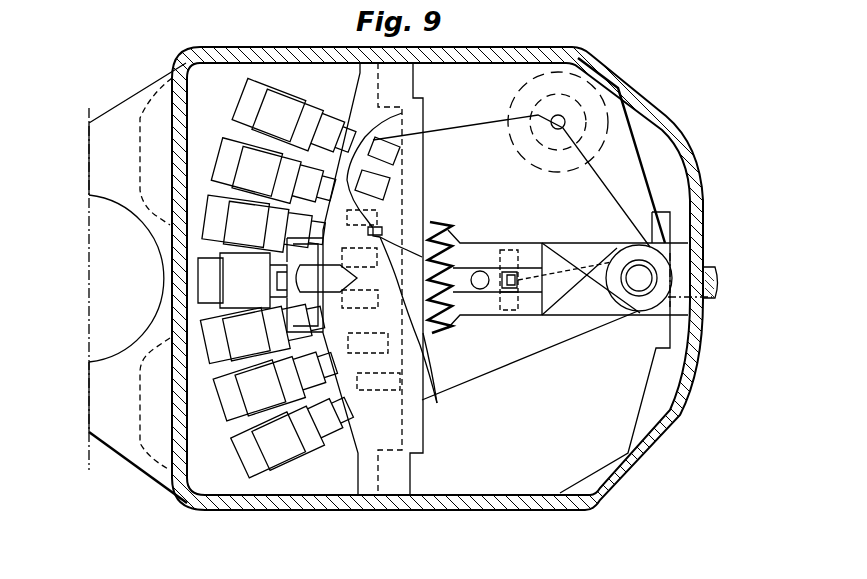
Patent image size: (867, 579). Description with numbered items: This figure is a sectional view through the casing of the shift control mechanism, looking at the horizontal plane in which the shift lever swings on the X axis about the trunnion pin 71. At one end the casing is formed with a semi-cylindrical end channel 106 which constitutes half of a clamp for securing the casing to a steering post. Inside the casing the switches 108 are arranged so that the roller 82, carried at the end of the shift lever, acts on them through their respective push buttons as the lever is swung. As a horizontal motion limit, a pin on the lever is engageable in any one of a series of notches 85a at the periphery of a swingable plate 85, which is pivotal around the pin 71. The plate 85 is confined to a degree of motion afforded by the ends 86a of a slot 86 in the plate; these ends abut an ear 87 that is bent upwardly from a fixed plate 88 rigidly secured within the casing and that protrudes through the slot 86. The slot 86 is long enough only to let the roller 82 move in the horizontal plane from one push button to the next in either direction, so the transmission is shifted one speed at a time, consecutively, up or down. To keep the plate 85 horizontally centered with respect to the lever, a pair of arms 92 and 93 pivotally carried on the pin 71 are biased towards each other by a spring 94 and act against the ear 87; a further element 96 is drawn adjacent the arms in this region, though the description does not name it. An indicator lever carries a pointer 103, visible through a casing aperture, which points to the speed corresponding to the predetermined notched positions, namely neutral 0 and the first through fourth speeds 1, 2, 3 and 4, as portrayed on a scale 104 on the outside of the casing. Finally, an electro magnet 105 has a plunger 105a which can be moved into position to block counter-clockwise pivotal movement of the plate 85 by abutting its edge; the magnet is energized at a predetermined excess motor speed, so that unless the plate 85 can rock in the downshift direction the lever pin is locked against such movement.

The neutral position 0 is at (364, 230).
The first speed position 1 is at (401, 270).
The second speed position 2 is at (402, 308).
The third speed position 3 is at (417, 337).
The fourth speed position 4 is at (430, 377).
The trunnion pin 71 is at (641, 278).
The roller 82 is at (271, 279).
The swingable plate 85 is at (485, 370).
The notches 85a is at (400, 172).
The slot 86 is at (520, 258).
The slot ends 86a is at (508, 305).
The ear 87 is at (517, 280).
The fixed plate 88 is at (628, 125).
The arm 92 is at (485, 245).
The arm 93 is at (560, 320).
The spring 94 is at (450, 225).
The roller 96 is at (479, 290).
The pointer 103 is at (326, 278).
The scale 104 is at (428, 345).
The electro magnet 105 is at (588, 90).
The plunger 105a is at (558, 115).
The semi-cylindrical end channel 106 is at (145, 397).
The switches 108 is at (273, 443).